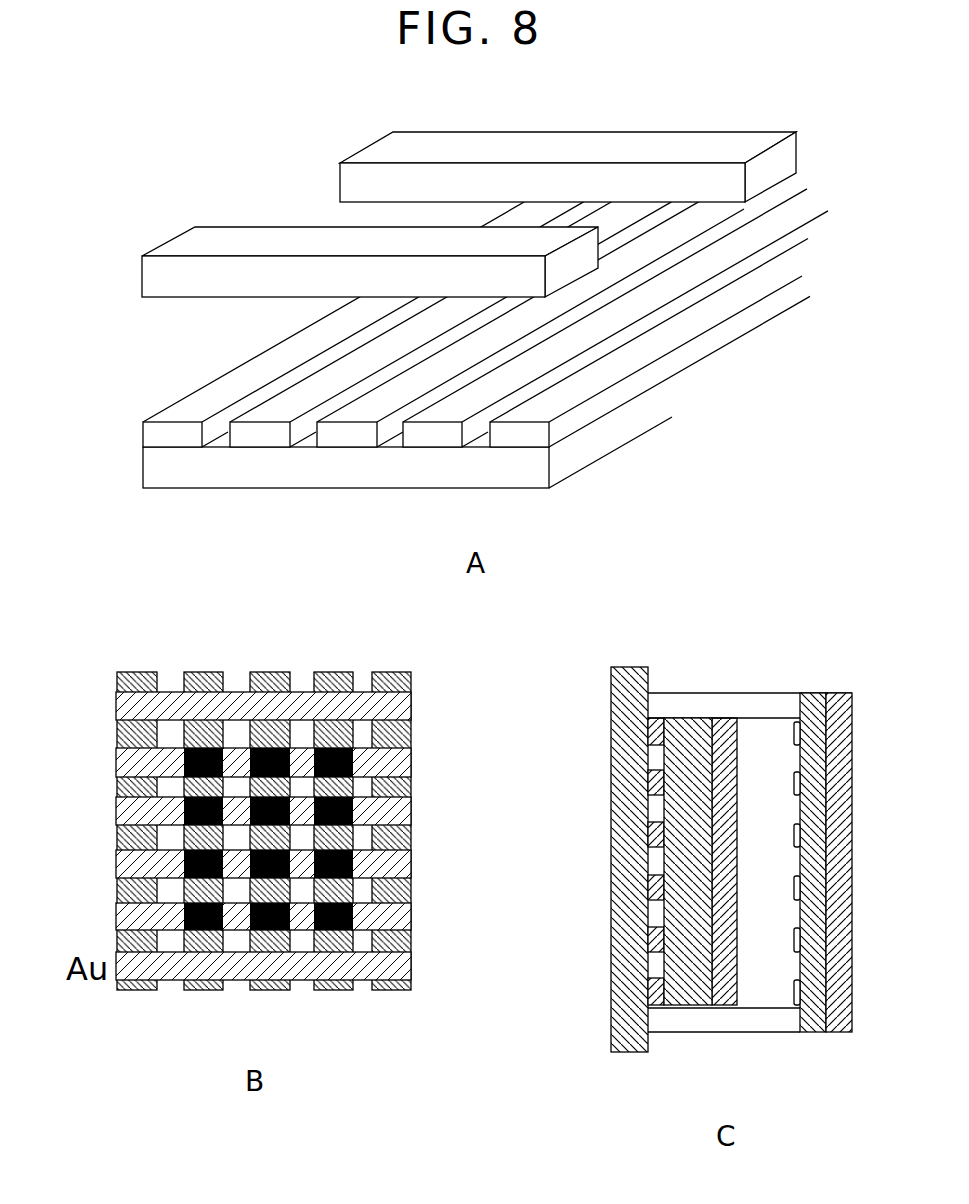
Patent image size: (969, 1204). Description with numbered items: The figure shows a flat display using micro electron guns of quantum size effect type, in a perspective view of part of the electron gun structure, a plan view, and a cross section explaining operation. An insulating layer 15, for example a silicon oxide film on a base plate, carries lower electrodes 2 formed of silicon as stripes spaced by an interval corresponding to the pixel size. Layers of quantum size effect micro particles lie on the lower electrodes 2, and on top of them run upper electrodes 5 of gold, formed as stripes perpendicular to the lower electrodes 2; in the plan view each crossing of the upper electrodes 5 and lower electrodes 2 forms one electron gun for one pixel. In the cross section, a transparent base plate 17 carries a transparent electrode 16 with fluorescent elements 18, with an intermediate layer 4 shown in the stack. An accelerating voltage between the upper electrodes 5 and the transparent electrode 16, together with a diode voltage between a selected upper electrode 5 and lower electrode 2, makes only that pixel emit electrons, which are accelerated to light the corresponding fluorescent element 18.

The lower electrodes 2 is at (150, 432).
The electron emission layer 4 is at (683, 718).
The upper electrodes 5 is at (233, 236).
The insulating layer 15 is at (155, 468).
The transparent electrode 16 is at (812, 1020).
The transparent base plate 17 is at (835, 708).
The fluorescent elements 18 is at (795, 940).